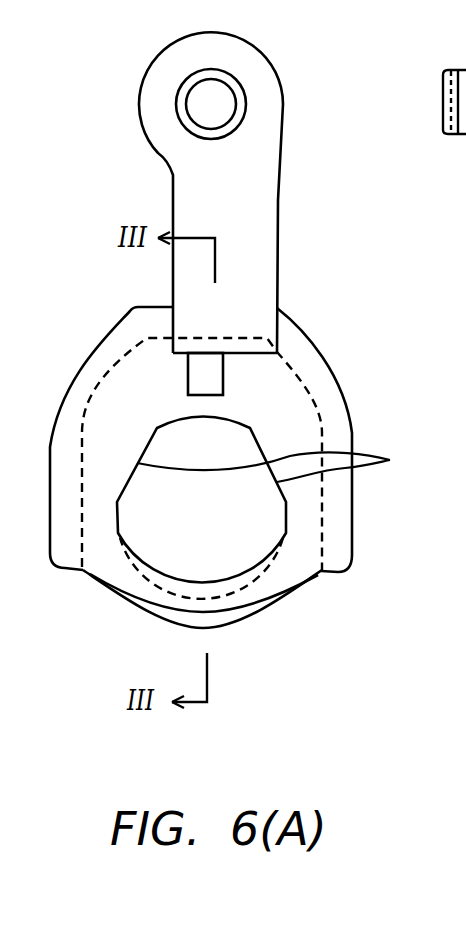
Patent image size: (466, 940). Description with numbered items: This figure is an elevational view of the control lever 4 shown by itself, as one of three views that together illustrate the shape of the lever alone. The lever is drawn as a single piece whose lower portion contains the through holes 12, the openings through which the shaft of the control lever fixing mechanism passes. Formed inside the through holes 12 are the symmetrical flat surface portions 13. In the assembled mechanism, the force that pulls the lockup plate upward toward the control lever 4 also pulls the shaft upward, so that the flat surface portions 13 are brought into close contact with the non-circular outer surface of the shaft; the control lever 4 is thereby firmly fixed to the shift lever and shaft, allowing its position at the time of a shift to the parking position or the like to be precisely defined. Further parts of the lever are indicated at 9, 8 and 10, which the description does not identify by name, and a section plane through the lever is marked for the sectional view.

The control lever 4 is at (252, 330).
The attachment arm 9 is at (262, 153).
The housing body 8 is at (333, 408).
The inner member 10 is at (273, 410).
The through holes 12 is at (216, 528).
The symmetrical flat surface portions 13 is at (390, 460).